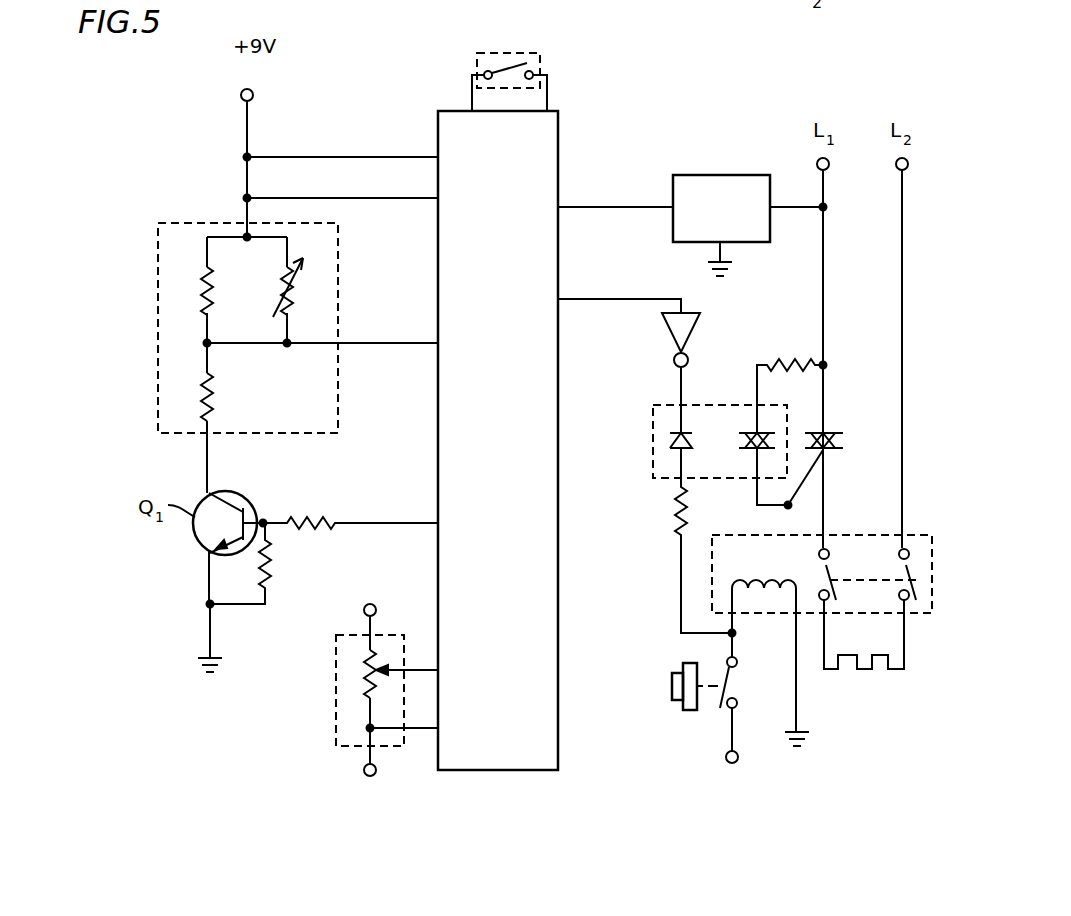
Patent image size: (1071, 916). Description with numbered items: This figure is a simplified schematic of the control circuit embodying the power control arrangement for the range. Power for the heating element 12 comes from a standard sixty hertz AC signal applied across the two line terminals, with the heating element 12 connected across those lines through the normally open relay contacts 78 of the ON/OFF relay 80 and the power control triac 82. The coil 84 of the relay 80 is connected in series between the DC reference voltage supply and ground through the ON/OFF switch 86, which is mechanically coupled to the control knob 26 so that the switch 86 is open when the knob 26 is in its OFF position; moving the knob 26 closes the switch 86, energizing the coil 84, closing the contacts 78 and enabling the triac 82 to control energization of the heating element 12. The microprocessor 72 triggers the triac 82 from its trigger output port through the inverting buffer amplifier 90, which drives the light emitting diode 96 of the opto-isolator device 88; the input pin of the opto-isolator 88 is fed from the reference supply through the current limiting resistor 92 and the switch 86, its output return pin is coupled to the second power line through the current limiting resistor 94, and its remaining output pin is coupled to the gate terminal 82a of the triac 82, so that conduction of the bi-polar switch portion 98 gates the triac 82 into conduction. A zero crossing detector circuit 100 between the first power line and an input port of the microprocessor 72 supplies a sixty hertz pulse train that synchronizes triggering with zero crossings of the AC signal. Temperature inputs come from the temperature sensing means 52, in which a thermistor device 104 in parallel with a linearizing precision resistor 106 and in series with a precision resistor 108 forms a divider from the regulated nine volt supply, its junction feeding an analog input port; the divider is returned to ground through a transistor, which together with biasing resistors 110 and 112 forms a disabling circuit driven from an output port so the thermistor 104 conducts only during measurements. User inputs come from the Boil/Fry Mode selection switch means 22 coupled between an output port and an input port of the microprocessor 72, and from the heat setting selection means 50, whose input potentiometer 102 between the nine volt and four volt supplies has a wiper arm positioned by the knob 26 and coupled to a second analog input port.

The heating element 12 is at (868, 669).
The Boil/Fry Mode selection switch means 22 is at (477, 60).
The control knob 26 is at (672, 690).
The heat setting selection means 50 is at (348, 671).
The temperature sensing means 52 is at (287, 312).
The microprocessor 72 is at (438, 122).
The relay contacts 78 is at (900, 570).
The ON/OFF relay 80 is at (835, 615).
The power control triac 82 is at (836, 441).
The gate terminal 82a is at (790, 505).
The coil 84 is at (773, 580).
The ON/OFF switch 86 is at (735, 672).
The opto-isolator device 88 is at (724, 453).
The inverting buffer amplifier 90 is at (662, 333).
The current limiting resistor 92 is at (676, 530).
The current limiting resistor 94 is at (790, 362).
The light emitting diode 96 is at (675, 447).
The bi-polar switch portion 98 is at (768, 432).
The zero crossing detector circuit 100 is at (745, 245).
The input potentiometer 102 is at (362, 668).
The thermistor device 104 is at (310, 283).
The linearizing precision resistor 106 is at (214, 296).
The precision resistor 108 is at (213, 412).
The biasing resistor 110 is at (296, 521).
The biasing resistor 112 is at (267, 590).